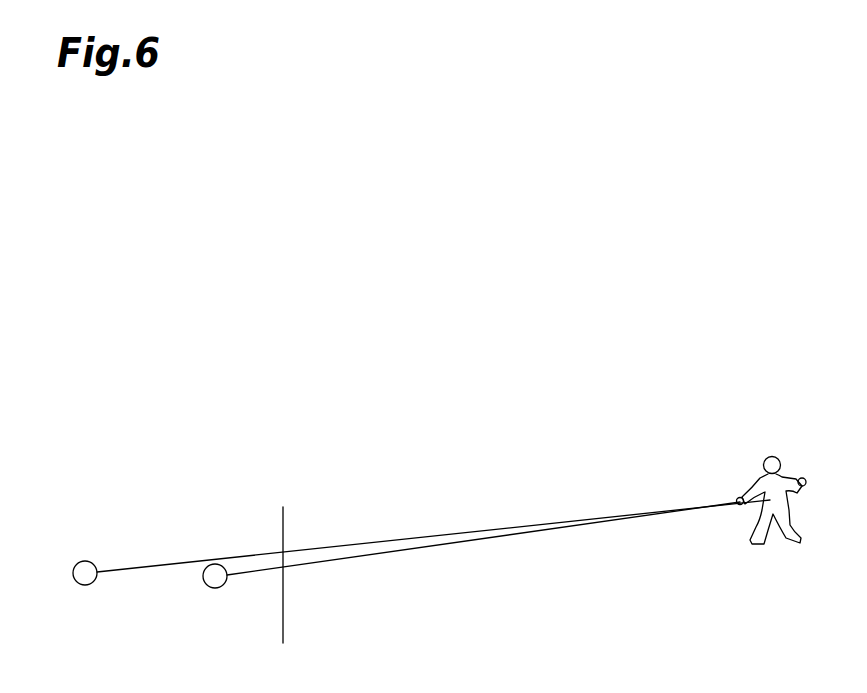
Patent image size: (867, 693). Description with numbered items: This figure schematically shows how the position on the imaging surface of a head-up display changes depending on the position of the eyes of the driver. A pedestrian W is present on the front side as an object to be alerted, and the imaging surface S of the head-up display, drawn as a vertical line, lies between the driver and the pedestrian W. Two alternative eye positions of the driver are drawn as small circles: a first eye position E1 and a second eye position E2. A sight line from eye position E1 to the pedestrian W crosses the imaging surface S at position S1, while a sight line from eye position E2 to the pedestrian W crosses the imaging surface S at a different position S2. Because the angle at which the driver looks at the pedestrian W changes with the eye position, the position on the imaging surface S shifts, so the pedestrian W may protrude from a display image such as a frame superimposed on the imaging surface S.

The position of the eyes of the driver E1 is at (83, 562).
The position of the eyes of the driver E2 is at (215, 588).
The imaging surface S is at (282, 525).
The position on the imaging surface S1 is at (285, 552).
The position on the imaging surface S2 is at (285, 568).
The pedestrian W is at (775, 457).